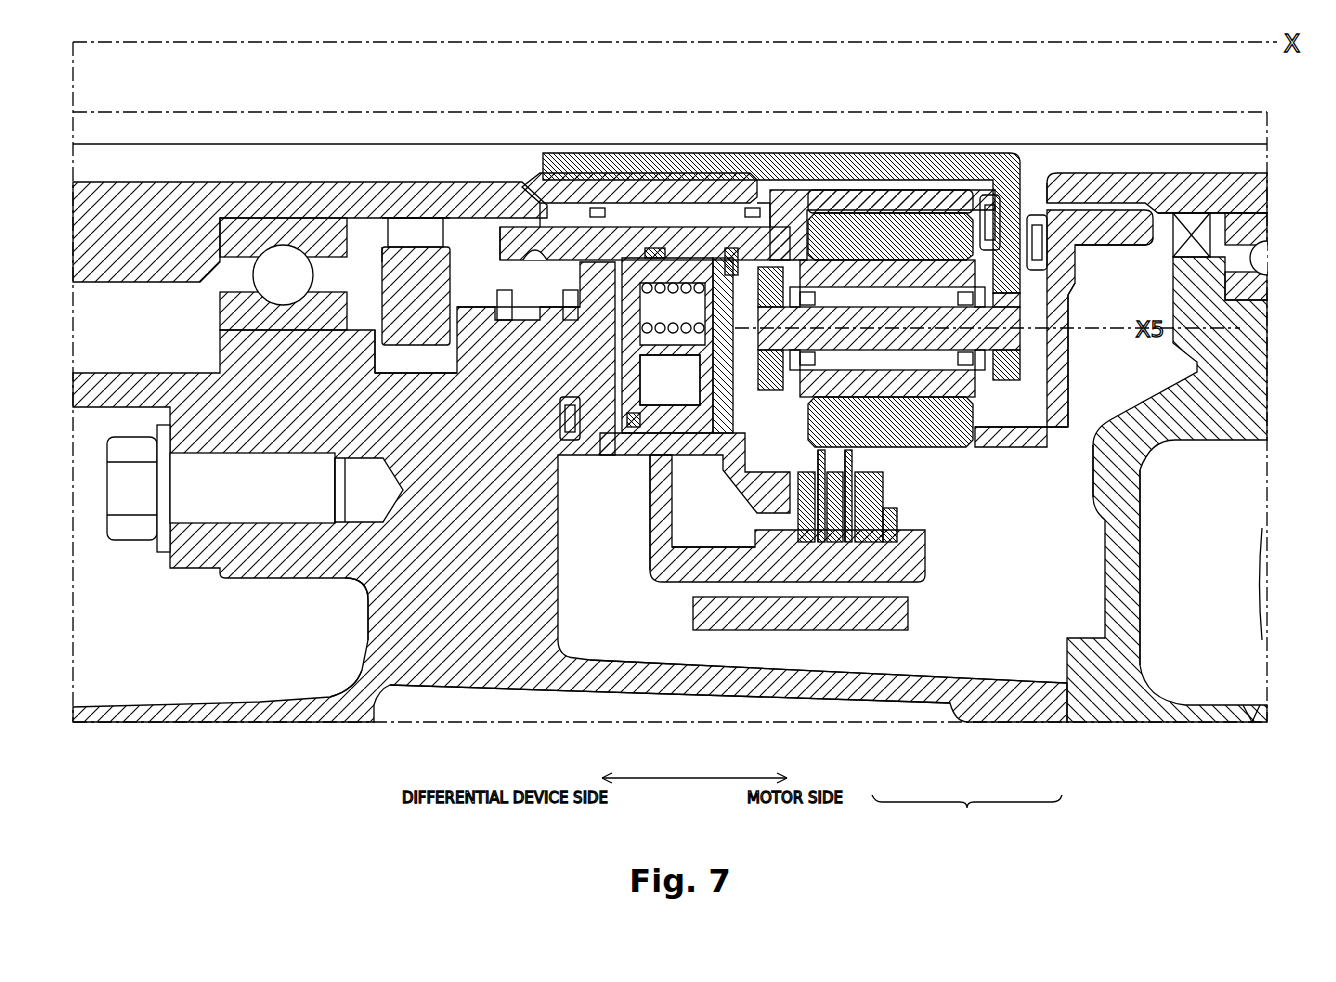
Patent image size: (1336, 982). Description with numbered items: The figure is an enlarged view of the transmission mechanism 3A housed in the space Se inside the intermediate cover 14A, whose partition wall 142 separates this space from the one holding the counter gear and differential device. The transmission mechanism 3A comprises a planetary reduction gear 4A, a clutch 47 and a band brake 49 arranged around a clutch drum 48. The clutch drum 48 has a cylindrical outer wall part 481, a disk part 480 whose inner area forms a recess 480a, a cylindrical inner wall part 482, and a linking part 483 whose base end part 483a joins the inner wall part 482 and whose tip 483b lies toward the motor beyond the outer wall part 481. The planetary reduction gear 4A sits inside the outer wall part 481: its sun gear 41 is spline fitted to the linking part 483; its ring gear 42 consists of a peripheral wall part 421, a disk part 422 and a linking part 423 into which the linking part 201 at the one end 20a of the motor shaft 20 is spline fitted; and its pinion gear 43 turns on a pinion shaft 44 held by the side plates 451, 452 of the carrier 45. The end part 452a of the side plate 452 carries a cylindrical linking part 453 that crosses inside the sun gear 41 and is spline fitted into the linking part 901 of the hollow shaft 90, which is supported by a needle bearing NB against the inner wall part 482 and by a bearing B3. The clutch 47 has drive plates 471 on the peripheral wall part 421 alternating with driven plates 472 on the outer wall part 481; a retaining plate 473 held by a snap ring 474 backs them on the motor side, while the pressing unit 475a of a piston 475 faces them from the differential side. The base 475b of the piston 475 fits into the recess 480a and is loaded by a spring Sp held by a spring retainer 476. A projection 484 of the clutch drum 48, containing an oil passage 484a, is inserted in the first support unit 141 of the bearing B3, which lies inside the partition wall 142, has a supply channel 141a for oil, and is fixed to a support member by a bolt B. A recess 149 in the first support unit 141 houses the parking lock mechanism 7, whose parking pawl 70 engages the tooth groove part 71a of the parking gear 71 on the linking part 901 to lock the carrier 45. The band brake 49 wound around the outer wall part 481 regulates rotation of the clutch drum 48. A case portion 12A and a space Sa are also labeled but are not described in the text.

The hollow shaft 90 is at (215, 180).
The bearing B3 is at (283, 262).
The parking gear 71 is at (375, 218).
The tooth groove part 71a is at (384, 240).
The parking lock mechanism 7 is at (425, 215).
The first support unit 141 is at (235, 345).
The supply channel 141a is at (545, 330).
The partition wall 142 is at (370, 635).
The recess 149 is at (440, 358).
The parking pawl 70 is at (410, 348).
The intermediate cover 14A is at (367, 703).
The bolt B is at (130, 508).
The needle bearing NB is at (560, 417).
The projection 484 is at (545, 225).
The oil passage 484a is at (525, 240).
The linking part 901 is at (580, 190).
The inner wall part 482 is at (665, 215).
The base end part 483a is at (770, 185).
The linking part 483 is at (820, 200).
The tip 483b is at (1005, 225).
The linking part 453 is at (955, 195).
The sun gear 41 is at (865, 212).
The pinion gear 43 is at (910, 225).
The end part 452a is at (995, 200).
The side plate 451 is at (889, 328).
The carrier 45 is at (765, 395).
The side plate 452 is at (985, 378).
The piston 475 is at (728, 600).
The base 475b is at (660, 395).
The spring retainer 476 is at (722, 415).
The spring Sp is at (673, 308).
The recess 480a is at (632, 430).
The pressing unit 475a is at (758, 490).
The clutch drum 48 is at (655, 592).
The disk part 480 is at (660, 540).
The outer wall part 481 is at (695, 560).
The clutch 47 is at (935, 585).
The drive plate 471 is at (848, 545).
The driven plate 472 is at (822, 545).
The retaining plate 473 is at (870, 500).
The snap ring 474 is at (895, 520).
The band brake 49 is at (885, 700).
The planetary reduction gear 4A is at (988, 600).
The transmission mechanism 3A is at (967, 817).
The ring gear 42 is at (1040, 452).
The peripheral wall part 421 is at (975, 443).
The disk part 422 is at (1063, 400).
The linking part 423 is at (1120, 248).
The pinion shaft 44 is at (1063, 340).
The motor shaft 20 is at (1275, 185).
The linking part 201 is at (1160, 195).
The one end 20a is at (1060, 200).
The case cover portion 12A is at (1145, 722).
The space Se is at (1037, 590).
The space Sa is at (1182, 595).